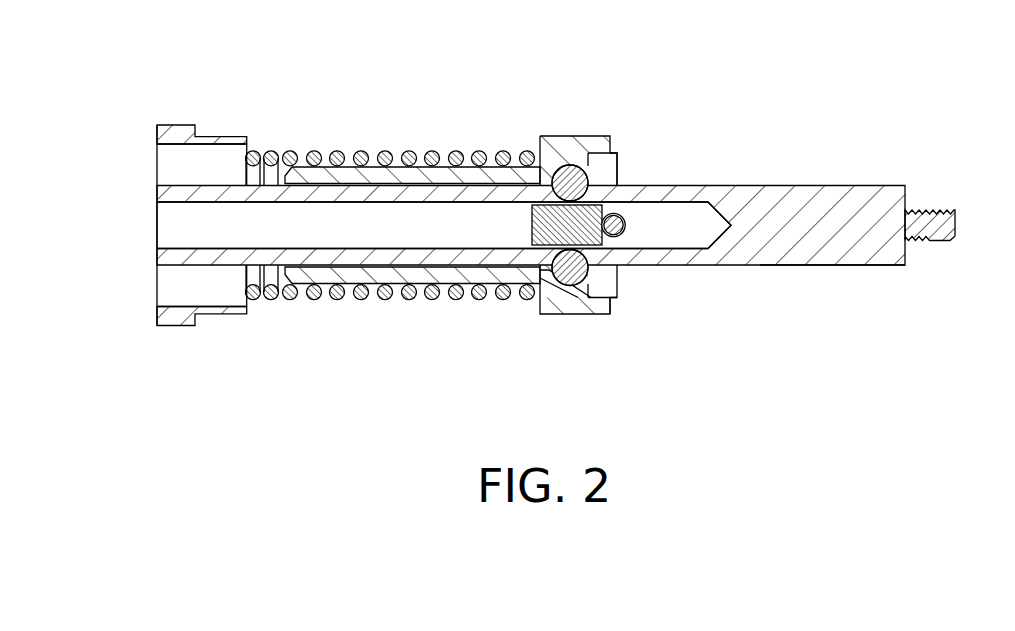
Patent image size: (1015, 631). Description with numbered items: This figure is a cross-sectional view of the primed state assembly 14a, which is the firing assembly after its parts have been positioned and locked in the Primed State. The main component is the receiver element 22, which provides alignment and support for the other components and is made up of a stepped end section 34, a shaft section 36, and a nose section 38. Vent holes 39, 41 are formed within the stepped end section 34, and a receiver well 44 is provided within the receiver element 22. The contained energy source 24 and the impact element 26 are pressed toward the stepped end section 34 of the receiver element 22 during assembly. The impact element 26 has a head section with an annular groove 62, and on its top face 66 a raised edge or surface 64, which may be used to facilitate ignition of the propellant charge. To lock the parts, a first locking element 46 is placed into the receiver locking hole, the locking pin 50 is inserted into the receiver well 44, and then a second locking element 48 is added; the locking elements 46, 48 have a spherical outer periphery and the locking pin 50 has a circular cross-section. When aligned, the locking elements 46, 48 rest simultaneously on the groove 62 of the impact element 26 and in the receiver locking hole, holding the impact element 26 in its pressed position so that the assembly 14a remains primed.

The primed state assembly 14a is at (830, 95).
The receiver element 22 is at (862, 186).
The contained energy source 24 is at (390, 300).
The impact element 26 is at (565, 136).
The stepped end section 34 is at (210, 137).
The shaft section 36 is at (845, 266).
The nose section 38 is at (933, 210).
The vent hole 39 is at (157, 160).
The vent hole 41 is at (157, 288).
The receiver well 44 is at (157, 221).
The first locking element 46 is at (588, 168).
The second locking element 48 is at (590, 280).
The locking pin 50 is at (619, 214).
The annular groove 62 is at (592, 290).
The raised edge or surface 64 is at (617, 150).
The top face 66 is at (617, 298).